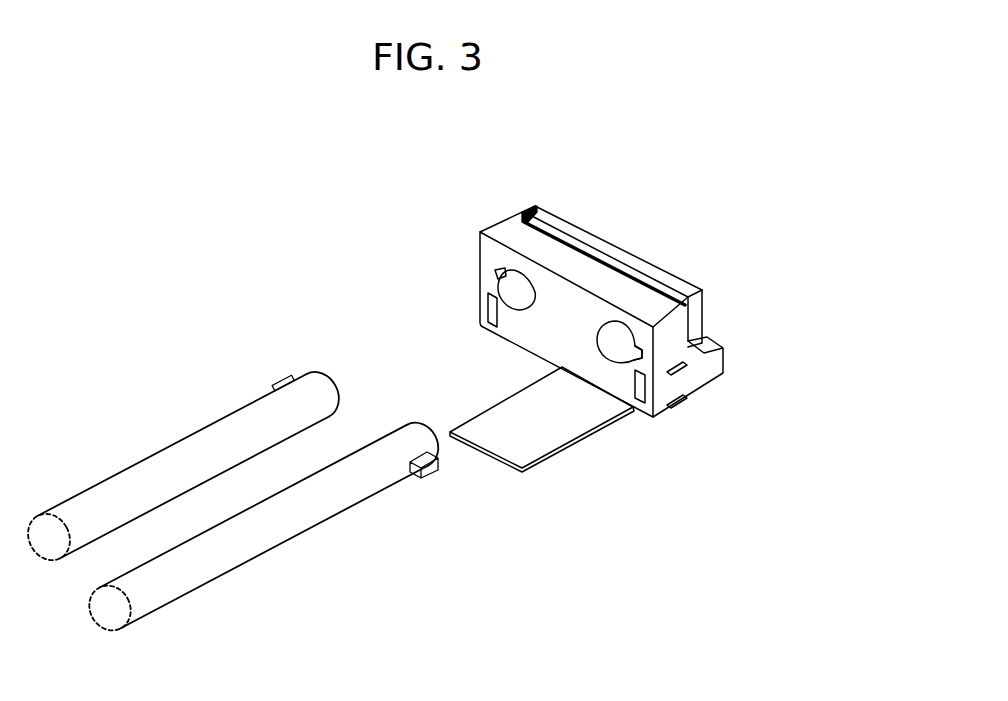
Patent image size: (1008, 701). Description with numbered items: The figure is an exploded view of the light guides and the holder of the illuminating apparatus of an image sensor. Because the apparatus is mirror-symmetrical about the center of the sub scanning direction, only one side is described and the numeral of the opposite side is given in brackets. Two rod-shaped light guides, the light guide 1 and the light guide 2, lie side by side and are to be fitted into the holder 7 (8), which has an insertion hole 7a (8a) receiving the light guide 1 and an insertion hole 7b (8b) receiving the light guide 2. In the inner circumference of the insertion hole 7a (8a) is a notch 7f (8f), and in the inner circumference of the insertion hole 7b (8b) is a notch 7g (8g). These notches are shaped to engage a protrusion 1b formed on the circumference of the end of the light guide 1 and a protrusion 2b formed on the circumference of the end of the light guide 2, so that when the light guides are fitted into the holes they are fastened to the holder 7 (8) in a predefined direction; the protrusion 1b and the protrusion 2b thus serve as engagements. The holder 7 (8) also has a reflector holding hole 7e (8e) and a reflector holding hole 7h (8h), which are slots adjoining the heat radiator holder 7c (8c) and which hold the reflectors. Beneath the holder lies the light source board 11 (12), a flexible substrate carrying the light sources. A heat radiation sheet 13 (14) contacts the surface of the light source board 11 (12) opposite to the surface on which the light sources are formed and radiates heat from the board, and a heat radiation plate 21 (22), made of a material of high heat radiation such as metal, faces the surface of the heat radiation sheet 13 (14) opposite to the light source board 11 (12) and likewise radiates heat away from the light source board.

The light guide 1 is at (188, 452).
The protrusion 1b is at (280, 383).
The light guide 2 is at (316, 496).
The protrusion 2b is at (437, 470).
The holder 7 is at (598, 276).
The holder 8 is at (591, 276).
The insertion hole 7a is at (521, 297).
The insertion hole 8a is at (452, 293).
The insertion hole 7b is at (613, 340).
The insertion hole 8b is at (635, 279).
The heat radiator holder 7c is at (692, 375).
The heat radiator holder 8c is at (700, 444).
The reflector holding hole 7e is at (484, 316).
The reflector holding hole 8e is at (438, 348).
The notch 7f is at (497, 273).
The notch 8f is at (438, 261).
The notch 7g is at (640, 348).
The notch 8g is at (712, 387).
The reflector holding hole 7h is at (653, 413).
The reflector holding hole 8h is at (659, 467).
The light source board 11 is at (538, 448).
The light source board 12 is at (542, 512).
The heat radiation sheet 13 is at (533, 218).
The heat radiation sheet 14 is at (554, 240).
The heat radiation plate 21 is at (702, 305).
The heat radiation plate 22 is at (713, 278).